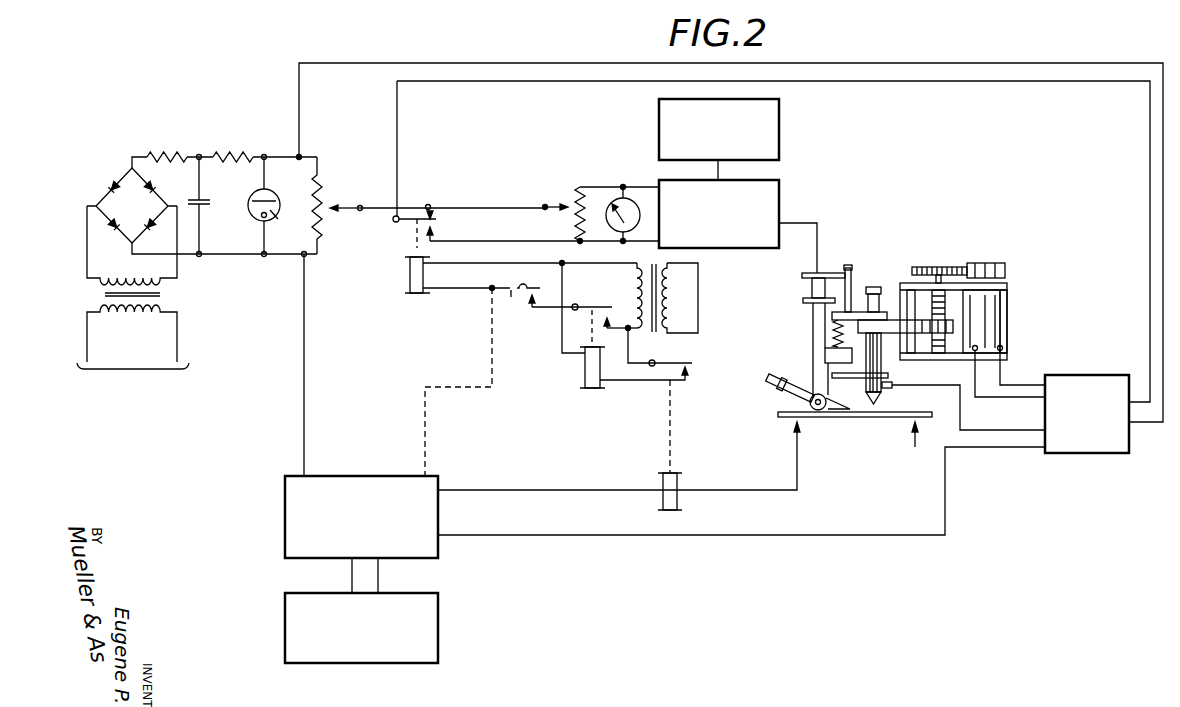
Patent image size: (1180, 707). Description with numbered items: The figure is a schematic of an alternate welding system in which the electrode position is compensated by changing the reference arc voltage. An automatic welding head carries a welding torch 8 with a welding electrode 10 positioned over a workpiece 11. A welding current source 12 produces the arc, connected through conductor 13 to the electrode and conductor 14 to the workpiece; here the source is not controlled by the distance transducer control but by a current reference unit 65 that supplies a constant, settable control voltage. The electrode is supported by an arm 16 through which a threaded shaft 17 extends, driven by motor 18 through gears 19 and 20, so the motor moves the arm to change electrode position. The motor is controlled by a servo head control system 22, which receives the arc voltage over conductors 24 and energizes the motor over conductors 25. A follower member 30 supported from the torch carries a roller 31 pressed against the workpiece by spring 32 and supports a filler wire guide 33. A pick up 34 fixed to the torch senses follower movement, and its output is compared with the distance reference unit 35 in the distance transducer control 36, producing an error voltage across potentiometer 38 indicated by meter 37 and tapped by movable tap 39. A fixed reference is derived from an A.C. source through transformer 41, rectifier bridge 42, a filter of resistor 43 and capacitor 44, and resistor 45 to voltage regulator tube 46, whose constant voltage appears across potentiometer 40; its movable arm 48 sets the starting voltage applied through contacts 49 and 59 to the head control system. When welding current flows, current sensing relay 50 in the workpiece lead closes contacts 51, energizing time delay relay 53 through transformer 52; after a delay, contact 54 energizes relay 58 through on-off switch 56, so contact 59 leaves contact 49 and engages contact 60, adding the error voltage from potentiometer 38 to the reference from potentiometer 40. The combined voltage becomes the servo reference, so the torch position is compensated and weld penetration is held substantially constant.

The welding torch 8 is at (866, 387).
The welding electrode 10 is at (876, 419).
The workpiece 11 is at (863, 418).
The welding current source 12 is at (358, 481).
The conductor 13 is at (945, 479).
The conductor 14 is at (798, 475).
The arm 16 is at (892, 323).
The threaded shaft 17 is at (945, 305).
The motor 18 is at (1007, 294).
The gear 19 is at (996, 263).
The gear 20 is at (948, 267).
The servo head control system 22 is at (1112, 385).
The conductors 24 is at (1015, 435).
The conductors 25 is at (1020, 397).
The follower member 30 is at (818, 352).
The roller 31 is at (818, 411).
The spring 32 is at (832, 330).
The filler wire guide 33 is at (771, 380).
The pick up 34 is at (810, 290).
The distance reference unit 35 is at (763, 120).
The distance transducer control 36 is at (765, 195).
The meter 37 is at (633, 197).
The potentiometer 38 is at (575, 230).
The movable tap 39 is at (563, 205).
The potentiometer 40 is at (332, 195).
The transformer 41 is at (165, 294).
The rectifier bridge 42 is at (122, 215).
The resistor 43 is at (172, 152).
The capacitor 44 is at (205, 206).
The resistor 45 is at (245, 152).
The voltage regulator tube 46 is at (272, 217).
The movable arm 48 is at (347, 210).
The contact 49 is at (431, 213).
The current sensing relay 50 is at (672, 483).
The contacts 51 is at (675, 363).
The transformer 52 is at (662, 330).
The time delay relay 53 is at (592, 365).
The contact 54 is at (600, 307).
The on-off switch 56 is at (505, 287).
The relay 58 is at (413, 280).
The contact 59 is at (436, 219).
The contact 60 is at (427, 233).
The current reference unit 65 is at (323, 596).